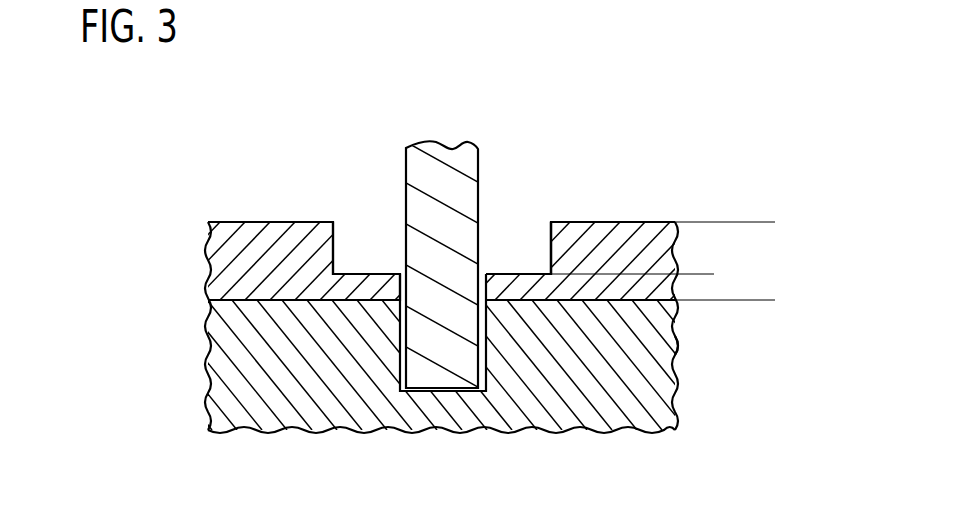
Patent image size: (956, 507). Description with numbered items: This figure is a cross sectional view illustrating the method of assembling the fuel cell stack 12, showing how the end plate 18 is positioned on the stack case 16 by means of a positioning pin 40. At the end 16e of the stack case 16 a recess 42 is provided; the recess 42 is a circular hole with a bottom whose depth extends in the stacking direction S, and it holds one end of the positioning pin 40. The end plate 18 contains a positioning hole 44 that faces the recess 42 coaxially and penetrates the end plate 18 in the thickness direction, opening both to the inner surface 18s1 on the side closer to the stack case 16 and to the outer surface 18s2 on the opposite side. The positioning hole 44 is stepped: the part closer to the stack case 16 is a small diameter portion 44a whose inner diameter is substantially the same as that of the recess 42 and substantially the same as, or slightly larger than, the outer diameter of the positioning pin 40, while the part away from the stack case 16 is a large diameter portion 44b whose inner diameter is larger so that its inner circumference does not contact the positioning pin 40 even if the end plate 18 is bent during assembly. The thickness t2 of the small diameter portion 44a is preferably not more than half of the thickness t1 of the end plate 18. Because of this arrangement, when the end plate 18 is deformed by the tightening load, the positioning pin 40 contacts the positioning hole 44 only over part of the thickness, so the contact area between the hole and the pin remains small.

The fuel cell stack 12 is at (273, 146).
The stack case 16 is at (686, 390).
The end of the stack case 16e is at (643, 360).
The end plate 18 is at (611, 211).
The inner surface 18s1 is at (250, 300).
The outer surface 18s2 is at (253, 220).
The positioning pin 40 is at (433, 165).
The recess 42 is at (484, 359).
The positioning hole 44 is at (350, 210).
The small diameter portion 44a is at (478, 284).
The large diameter portion 44b is at (551, 236).
The thickness of the end plate t1 is at (765, 224).
The thickness of the small diameter portion t2 is at (708, 248).
The stacking direction S is at (98, 339).